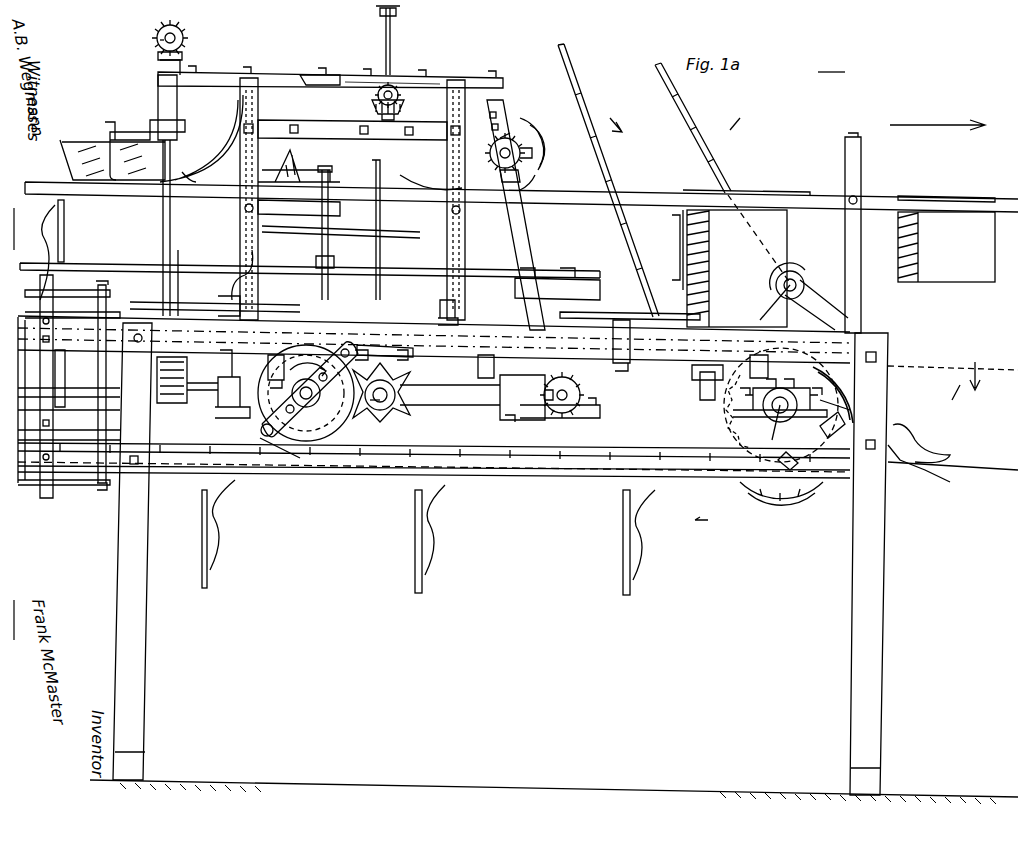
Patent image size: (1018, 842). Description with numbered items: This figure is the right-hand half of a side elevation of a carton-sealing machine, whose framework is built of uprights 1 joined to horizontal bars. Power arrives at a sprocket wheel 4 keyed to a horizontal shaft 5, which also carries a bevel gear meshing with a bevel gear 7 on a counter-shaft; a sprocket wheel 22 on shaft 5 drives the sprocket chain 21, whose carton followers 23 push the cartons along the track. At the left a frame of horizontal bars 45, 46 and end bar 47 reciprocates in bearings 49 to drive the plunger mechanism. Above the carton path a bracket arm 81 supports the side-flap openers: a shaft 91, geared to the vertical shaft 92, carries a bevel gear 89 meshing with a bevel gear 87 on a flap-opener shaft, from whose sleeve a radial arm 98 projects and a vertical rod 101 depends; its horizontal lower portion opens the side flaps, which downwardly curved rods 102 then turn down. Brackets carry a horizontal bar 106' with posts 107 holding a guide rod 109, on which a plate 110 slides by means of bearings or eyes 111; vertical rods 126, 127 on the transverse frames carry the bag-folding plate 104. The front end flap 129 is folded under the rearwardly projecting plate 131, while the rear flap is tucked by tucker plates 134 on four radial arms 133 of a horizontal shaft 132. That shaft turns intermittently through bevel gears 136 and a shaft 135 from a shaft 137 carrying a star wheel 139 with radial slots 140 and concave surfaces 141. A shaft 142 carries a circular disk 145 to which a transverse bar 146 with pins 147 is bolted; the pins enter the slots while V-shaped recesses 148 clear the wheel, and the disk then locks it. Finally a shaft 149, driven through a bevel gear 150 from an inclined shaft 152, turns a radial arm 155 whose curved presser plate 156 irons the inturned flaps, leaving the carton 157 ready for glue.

The uprights 1 is at (882, 575).
The sprocket wheel 4 is at (977, 381).
The horizontal shaft 5 is at (768, 424).
The bevel gear 7 is at (724, 348).
The sprocket chain 21 is at (598, 466).
The sprocket wheel 22 is at (802, 380).
The carton followers 23 is at (347, 397).
The horizontal bar 45 is at (90, 286).
The horizontal bar 46 is at (78, 486).
The end bar 47 is at (103, 490).
The bearings 49 is at (52, 290).
The bracket arm 81 is at (196, 74).
The bevel gear 87 is at (158, 52).
The bevel gear 89 is at (183, 34).
The shaft 91 is at (156, 38).
The vertical shaft 92 is at (168, 262).
The radial arm 98 is at (137, 130).
The vertical rod 101 is at (120, 162).
The downwardly curved rods 102 is at (190, 172).
The bag-folding plate 104 is at (308, 172).
The horizontal bar 106' is at (215, 300).
The posts 107 is at (232, 290).
The guide rod 109 is at (316, 262).
The plate 110 is at (320, 258).
The bearings or eyes 111 is at (312, 280).
The vertical rod 126 is at (330, 209).
The vertical rod 127 is at (370, 228).
The end flap 129 is at (268, 145).
The plate 131 is at (430, 186).
The horizontal shaft 132 is at (395, 85).
The radial arms 133 is at (345, 75).
The tucker plates 134 is at (398, 8).
The shaft 135 is at (358, 129).
The bevel gears 136 is at (372, 103).
The shaft 137 is at (315, 430).
The star wheel 139 is at (405, 385).
The radial slots 140 is at (404, 385).
The concave surfaces 141 is at (402, 400).
The shaft 142 is at (378, 400).
The circular disk 145 is at (258, 372).
The transverse bar 146 is at (262, 430).
The pins 147 is at (266, 442).
The V-shaped recess 148 is at (345, 333).
The shaft 149 is at (512, 137).
The bevel gear 150 is at (488, 152).
The shaft 152 is at (545, 222).
The radial arm 155 is at (530, 138).
The curved presser plate 156 is at (540, 152).
The carton 157 is at (538, 168).